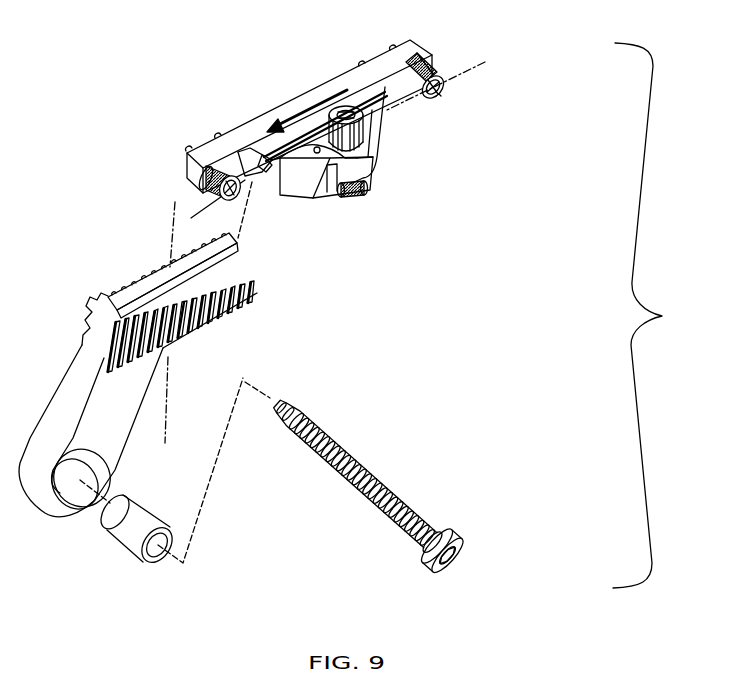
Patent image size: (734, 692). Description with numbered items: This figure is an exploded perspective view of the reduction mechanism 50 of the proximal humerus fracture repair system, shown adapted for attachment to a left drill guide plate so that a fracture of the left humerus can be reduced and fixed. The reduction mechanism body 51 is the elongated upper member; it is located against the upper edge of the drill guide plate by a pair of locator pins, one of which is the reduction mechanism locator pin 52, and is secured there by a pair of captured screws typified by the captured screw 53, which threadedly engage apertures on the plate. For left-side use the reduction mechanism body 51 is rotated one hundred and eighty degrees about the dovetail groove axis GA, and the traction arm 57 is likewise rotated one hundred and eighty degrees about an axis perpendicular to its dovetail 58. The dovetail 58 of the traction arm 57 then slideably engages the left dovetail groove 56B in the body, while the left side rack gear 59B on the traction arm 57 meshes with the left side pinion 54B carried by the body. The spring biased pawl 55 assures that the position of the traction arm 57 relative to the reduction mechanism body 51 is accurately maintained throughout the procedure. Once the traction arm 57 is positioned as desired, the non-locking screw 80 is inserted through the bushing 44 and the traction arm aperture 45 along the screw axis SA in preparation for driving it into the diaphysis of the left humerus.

The reduction mechanism 50 is at (653, 315).
The reduction mechanism body 51 is at (427, 48).
The reduction mechanism locator pin 52 is at (217, 137).
The captured screw 53 is at (186, 153).
The dovetail groove axis GA is at (463, 75).
The screw axis SA is at (172, 238).
The left dovetail groove 56B is at (271, 179).
The spring biased pawl 55 is at (301, 193).
The left side pinion 54B is at (369, 192).
The dovetail 58 is at (131, 291).
The left side rack gear 59B is at (250, 280).
The traction arm 57 is at (67, 387).
The traction arm aperture 45 is at (67, 497).
The bushing 44 is at (142, 507).
The non-locking screw 80 is at (363, 460).